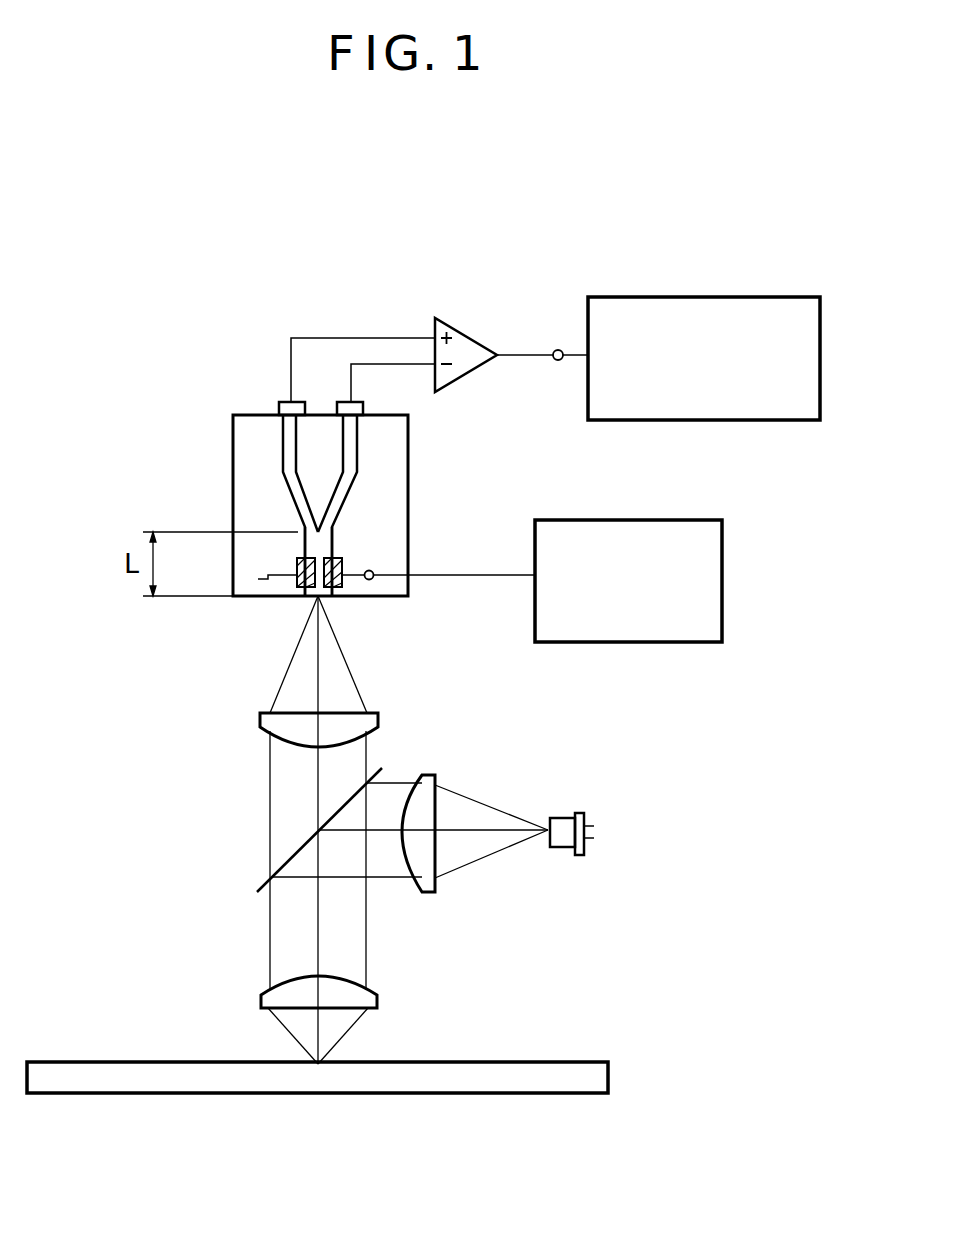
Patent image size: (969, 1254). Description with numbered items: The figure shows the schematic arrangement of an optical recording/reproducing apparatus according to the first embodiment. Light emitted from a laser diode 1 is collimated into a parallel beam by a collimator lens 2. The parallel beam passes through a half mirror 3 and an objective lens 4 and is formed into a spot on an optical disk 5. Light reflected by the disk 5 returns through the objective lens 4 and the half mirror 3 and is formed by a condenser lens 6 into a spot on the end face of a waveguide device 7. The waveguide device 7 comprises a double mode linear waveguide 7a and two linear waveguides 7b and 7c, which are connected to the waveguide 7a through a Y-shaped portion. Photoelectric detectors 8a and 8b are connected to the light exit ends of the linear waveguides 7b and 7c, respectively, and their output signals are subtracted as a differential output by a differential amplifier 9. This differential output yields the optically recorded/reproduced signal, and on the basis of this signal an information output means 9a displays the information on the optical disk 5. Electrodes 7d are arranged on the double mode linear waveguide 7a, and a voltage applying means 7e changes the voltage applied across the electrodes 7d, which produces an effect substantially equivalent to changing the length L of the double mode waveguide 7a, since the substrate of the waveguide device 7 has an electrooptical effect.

The laser diode 1 is at (566, 816).
The collimator lens 2 is at (438, 778).
The half mirror 3 is at (258, 885).
The objective lens 4 is at (262, 995).
The optical disk 5 is at (515, 1061).
The condenser lens 6 is at (258, 722).
The waveguide device 7 is at (410, 542).
The double mode linear waveguide 7a is at (325, 543).
The linear waveguide 7b is at (284, 448).
The linear waveguide 7c is at (352, 437).
The electrodes 7d is at (317, 587).
The voltage applying means 7e is at (687, 520).
The photoelectric detector 8a is at (278, 400).
The photoelectric detector 8b is at (365, 401).
The differential amplifier 9 is at (480, 347).
The information output means 9a is at (737, 296).